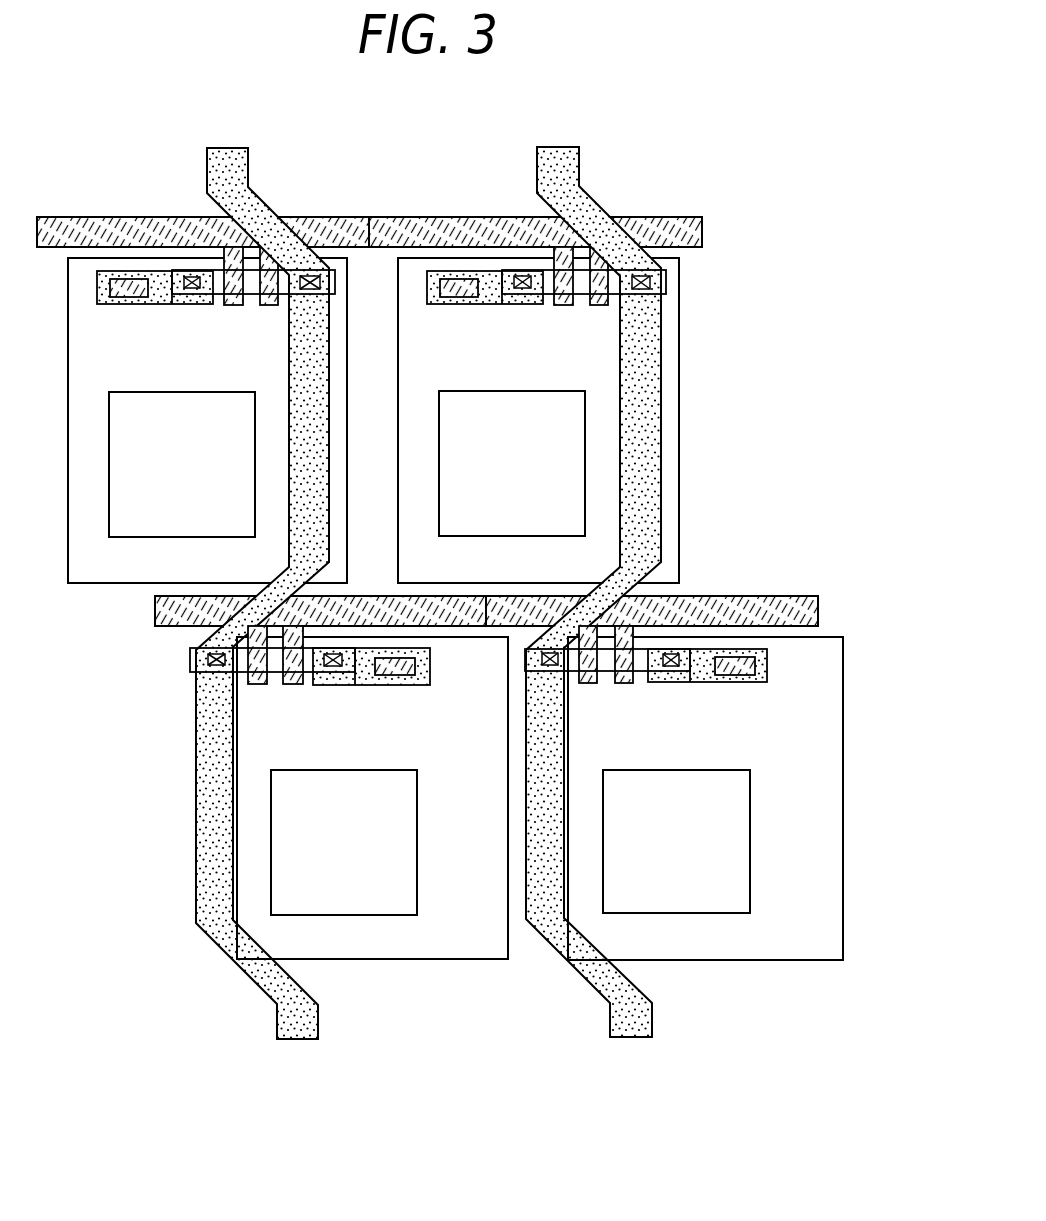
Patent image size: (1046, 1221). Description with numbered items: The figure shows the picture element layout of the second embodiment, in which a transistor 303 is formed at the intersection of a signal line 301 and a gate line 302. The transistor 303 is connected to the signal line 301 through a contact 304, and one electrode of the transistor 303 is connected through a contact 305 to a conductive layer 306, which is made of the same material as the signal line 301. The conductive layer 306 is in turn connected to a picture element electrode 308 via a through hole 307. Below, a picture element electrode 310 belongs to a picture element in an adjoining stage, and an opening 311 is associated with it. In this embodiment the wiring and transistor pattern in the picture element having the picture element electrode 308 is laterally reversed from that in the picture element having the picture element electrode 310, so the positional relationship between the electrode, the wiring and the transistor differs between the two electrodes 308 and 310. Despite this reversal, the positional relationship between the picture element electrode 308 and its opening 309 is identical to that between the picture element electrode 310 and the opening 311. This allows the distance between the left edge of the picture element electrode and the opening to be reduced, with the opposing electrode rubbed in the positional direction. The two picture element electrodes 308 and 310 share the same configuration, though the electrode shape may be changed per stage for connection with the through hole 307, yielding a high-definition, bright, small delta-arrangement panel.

The signal line 301 is at (650, 362).
The gate line 302 is at (677, 222).
The transistor 303 is at (582, 292).
The contact 304 is at (667, 278).
The contact 305 is at (523, 305).
The conductive layer 306 is at (490, 303).
The through hole 307 is at (445, 296).
The picture element electrode 308 is at (680, 422).
The opening 309 is at (497, 536).
The picture element electrode 310 is at (843, 699).
The opening 311 is at (674, 770).